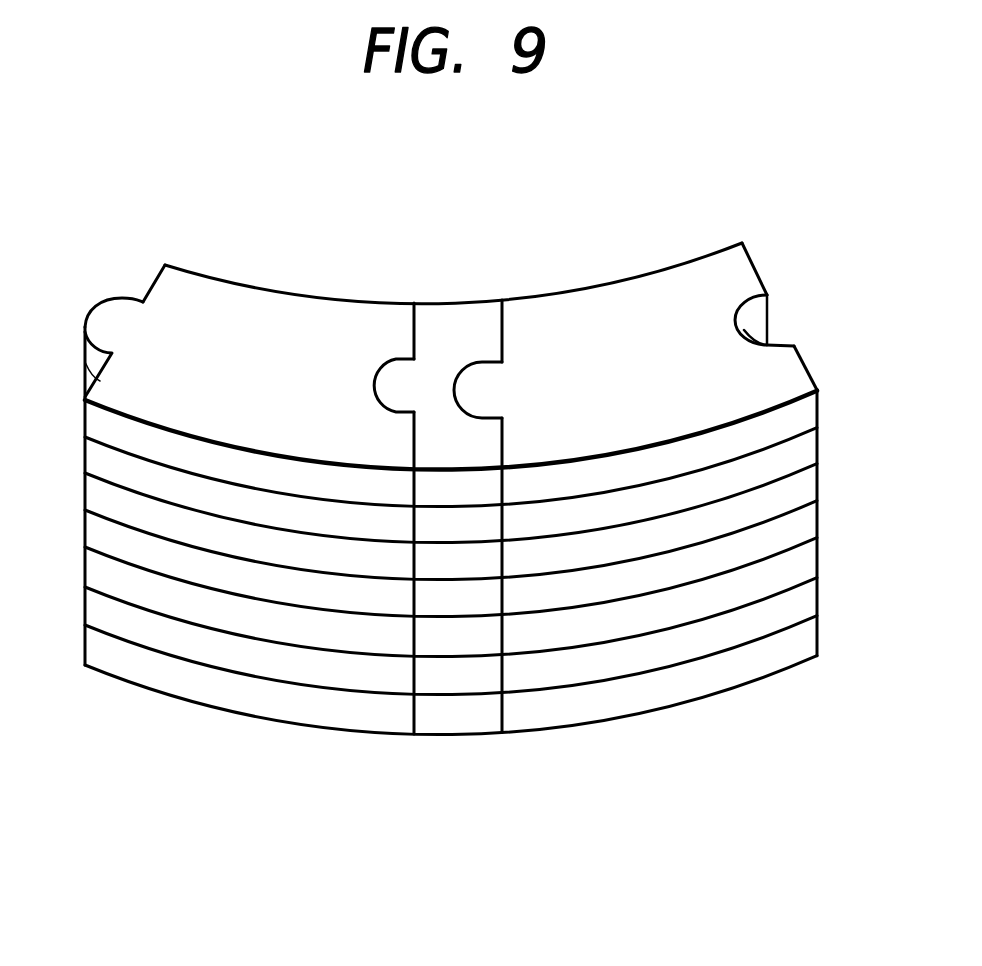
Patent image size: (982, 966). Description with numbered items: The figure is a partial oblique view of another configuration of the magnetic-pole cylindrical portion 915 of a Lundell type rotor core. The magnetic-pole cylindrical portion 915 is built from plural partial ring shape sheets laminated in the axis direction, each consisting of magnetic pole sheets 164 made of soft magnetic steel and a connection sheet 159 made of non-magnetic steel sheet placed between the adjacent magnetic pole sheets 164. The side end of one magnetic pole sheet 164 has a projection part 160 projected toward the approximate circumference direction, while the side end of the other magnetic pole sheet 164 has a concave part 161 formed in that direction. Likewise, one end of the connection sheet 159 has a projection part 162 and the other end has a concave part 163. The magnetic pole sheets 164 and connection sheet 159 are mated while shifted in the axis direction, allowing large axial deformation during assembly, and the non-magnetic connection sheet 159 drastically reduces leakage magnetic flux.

The magnetic-pole cylindrical portion 915 is at (539, 748).
The connection sheet 159 is at (462, 322).
The projection part 160 is at (95, 307).
The concave part 161 is at (769, 335).
The projection part 162 is at (380, 378).
The concave part 163 is at (458, 393).
The magnetic pole sheet 164 is at (200, 565).